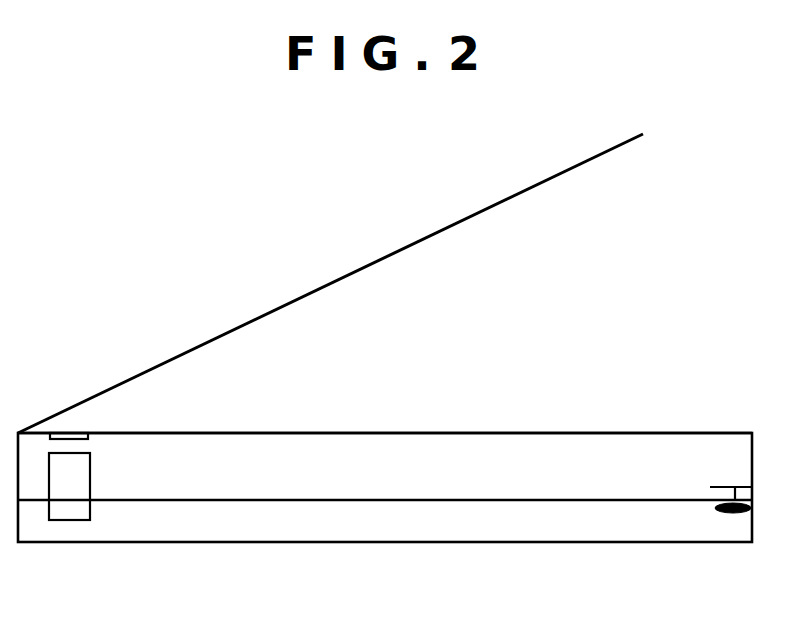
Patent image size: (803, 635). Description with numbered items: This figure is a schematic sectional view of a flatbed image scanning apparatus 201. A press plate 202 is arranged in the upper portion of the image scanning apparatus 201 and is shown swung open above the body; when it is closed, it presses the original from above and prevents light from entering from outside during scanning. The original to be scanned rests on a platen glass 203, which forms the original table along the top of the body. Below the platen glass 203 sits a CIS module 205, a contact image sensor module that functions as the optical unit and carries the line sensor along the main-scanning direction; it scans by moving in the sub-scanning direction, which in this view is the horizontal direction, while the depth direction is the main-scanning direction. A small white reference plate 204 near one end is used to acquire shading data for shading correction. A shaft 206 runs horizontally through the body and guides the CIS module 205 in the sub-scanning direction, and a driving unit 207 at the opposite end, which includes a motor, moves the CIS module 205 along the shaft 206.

The image scanning apparatus 201 is at (250, 544).
The press plate 202 is at (522, 188).
The platen glass 203 is at (376, 433).
The white reference plate 204 is at (88, 437).
The CIS module 205 is at (90, 480).
The shaft 206 is at (376, 500).
The driving unit 207 is at (725, 514).